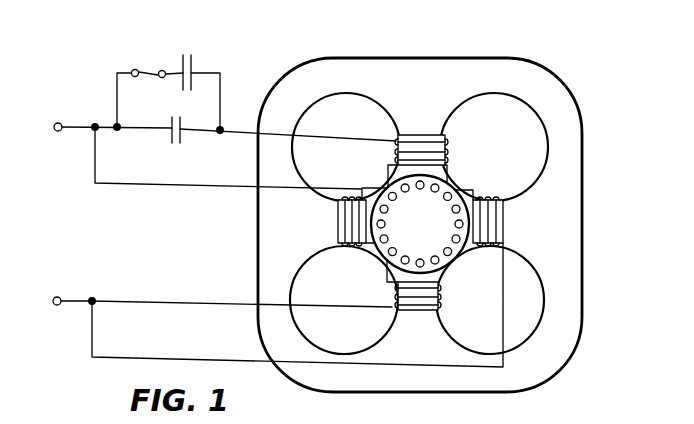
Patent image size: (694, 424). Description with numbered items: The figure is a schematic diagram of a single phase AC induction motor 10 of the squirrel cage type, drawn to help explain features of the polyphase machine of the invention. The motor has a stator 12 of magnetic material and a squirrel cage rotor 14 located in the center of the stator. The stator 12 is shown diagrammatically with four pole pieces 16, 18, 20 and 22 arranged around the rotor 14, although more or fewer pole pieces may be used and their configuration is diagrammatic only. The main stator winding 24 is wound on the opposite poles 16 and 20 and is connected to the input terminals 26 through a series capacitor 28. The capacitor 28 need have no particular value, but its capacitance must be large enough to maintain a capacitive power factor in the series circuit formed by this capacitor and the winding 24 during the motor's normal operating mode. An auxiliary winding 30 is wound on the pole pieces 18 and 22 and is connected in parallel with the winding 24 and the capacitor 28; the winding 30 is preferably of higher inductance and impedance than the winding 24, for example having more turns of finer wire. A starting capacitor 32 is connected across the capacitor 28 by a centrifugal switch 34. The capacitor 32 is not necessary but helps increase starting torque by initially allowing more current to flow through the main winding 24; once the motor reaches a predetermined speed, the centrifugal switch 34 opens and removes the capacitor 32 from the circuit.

The AC induction motor 10 is at (462, 225).
The stator 12 is at (584, 132).
The squirrel cage rotor 14 is at (448, 182).
The pole piece 16 is at (450, 123).
The pole piece 18 is at (503, 248).
The pole piece 20 is at (397, 312).
The pole piece 22 is at (331, 245).
The main stator winding 24 is at (443, 148).
The input terminals 26 is at (58, 132).
The series capacitor 28 is at (175, 147).
The auxiliary winding 30 is at (338, 226).
The starting capacitor 32 is at (193, 56).
The centrifugal switch 34 is at (147, 70).